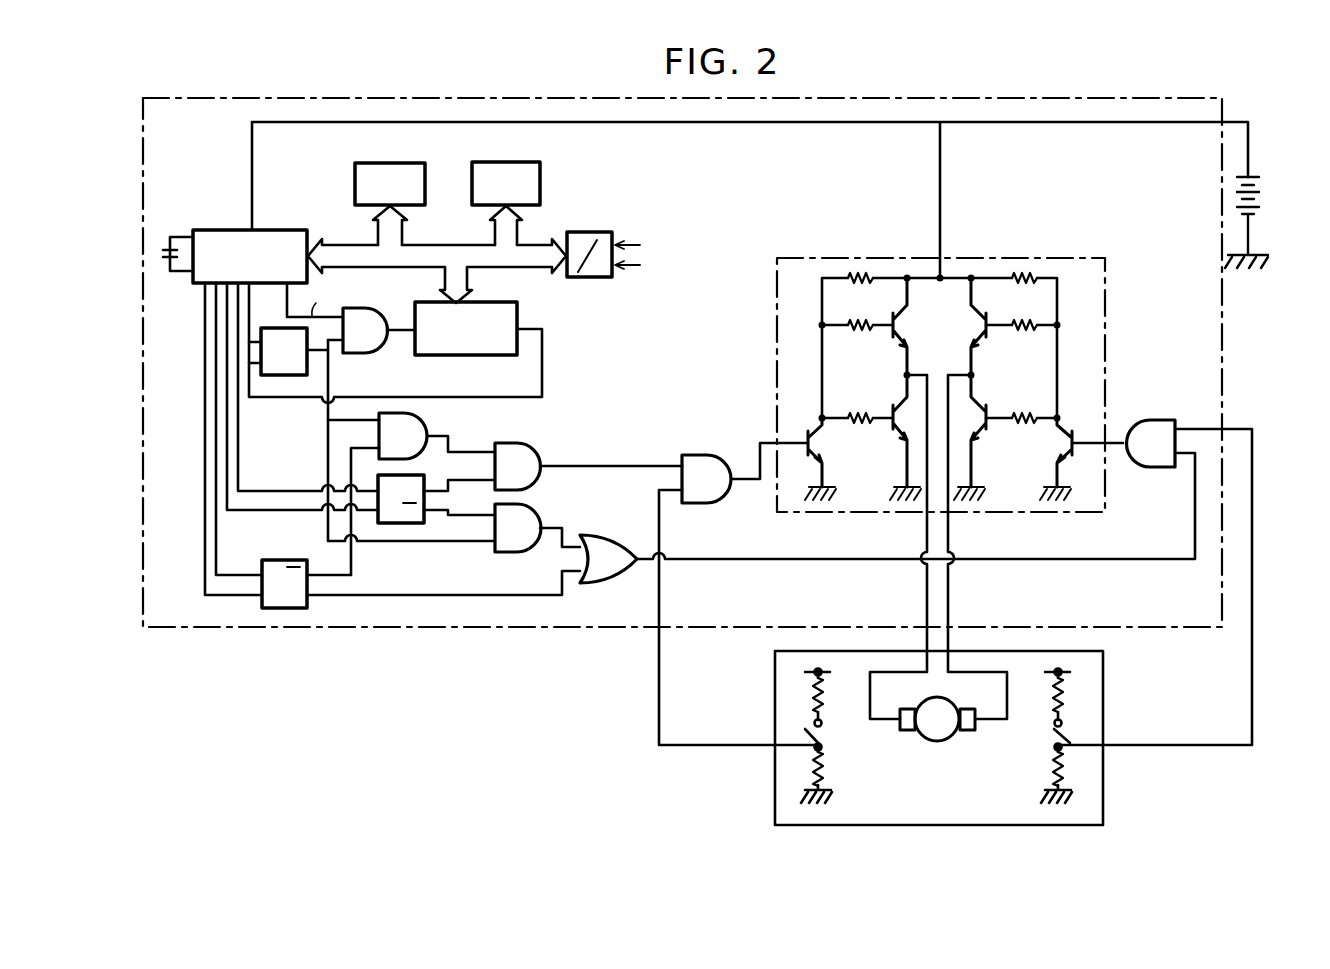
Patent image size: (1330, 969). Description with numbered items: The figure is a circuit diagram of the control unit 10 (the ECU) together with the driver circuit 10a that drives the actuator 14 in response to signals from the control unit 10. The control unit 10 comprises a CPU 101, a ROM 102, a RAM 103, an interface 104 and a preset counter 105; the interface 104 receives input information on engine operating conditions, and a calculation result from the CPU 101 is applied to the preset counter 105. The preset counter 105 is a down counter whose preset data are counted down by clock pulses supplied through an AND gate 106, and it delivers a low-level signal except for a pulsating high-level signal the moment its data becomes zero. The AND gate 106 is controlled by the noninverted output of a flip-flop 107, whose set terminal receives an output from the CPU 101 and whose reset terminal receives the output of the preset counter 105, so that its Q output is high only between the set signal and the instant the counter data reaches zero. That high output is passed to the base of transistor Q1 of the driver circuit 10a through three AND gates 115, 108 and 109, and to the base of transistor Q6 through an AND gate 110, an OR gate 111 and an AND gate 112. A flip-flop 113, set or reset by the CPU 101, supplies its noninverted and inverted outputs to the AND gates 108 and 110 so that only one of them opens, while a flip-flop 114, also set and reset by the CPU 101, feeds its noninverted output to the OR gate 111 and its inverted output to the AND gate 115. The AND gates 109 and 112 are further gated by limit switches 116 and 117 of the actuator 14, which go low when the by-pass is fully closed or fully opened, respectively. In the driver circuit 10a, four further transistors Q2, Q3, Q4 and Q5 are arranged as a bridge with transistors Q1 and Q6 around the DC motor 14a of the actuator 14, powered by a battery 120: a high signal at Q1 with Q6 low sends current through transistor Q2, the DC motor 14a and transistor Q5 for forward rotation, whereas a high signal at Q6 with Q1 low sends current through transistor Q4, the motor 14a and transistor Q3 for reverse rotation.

The control unit (ECU) 10 is at (446, 628).
The driver circuit 10a is at (941, 363).
The actuator 14 is at (940, 763).
The DC motor 14a is at (937, 742).
The CPU 101 is at (287, 228).
The ROM 102 is at (405, 163).
The RAM 103 is at (527, 162).
The interface (I/F) 104 is at (603, 232).
The preset counter 105 is at (520, 320).
The AND gate 106 is at (388, 316).
The flip-flop 107 is at (267, 326).
The AND gate 108 is at (535, 447).
The AND gate 109 is at (712, 455).
The AND gate 110 is at (535, 501).
The OR gate 111 is at (592, 535).
The AND gate 112 is at (1165, 420).
The flip-flop 113 is at (424, 493).
The flip-flop 114 is at (282, 560).
The AND gate 115 is at (427, 431).
The limit switch 116 is at (825, 735).
The limit switch 117 is at (1048, 735).
The battery 120 is at (1262, 196).
The transistor Q1 is at (812, 428).
The transistor Q2 is at (893, 336).
The transistor Q3 is at (893, 400).
The transistor Q4 is at (986, 336).
The transistor Q5 is at (986, 400).
The transistor Q6 is at (1074, 429).